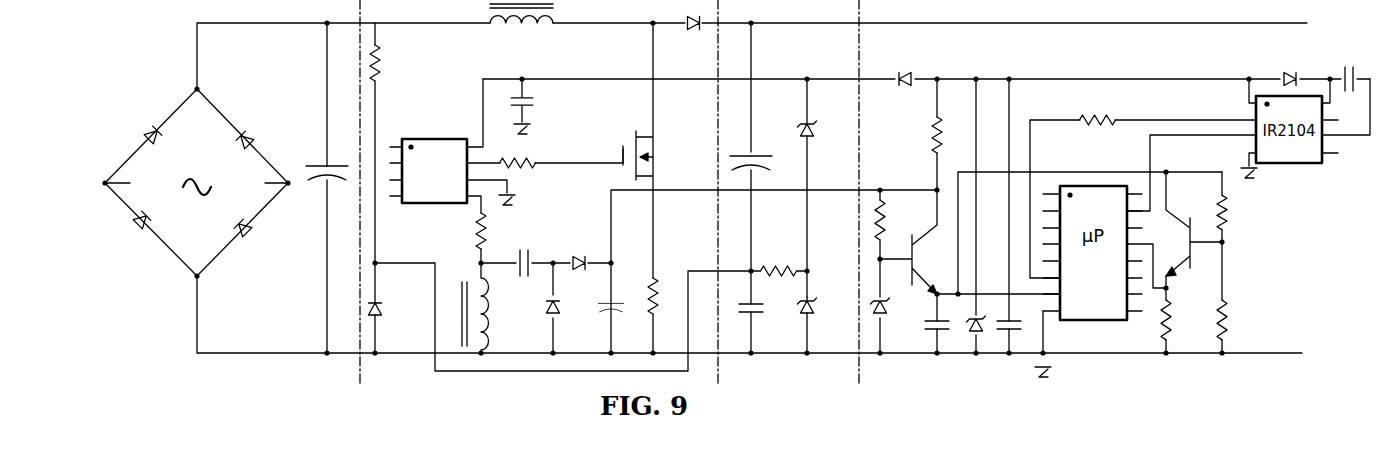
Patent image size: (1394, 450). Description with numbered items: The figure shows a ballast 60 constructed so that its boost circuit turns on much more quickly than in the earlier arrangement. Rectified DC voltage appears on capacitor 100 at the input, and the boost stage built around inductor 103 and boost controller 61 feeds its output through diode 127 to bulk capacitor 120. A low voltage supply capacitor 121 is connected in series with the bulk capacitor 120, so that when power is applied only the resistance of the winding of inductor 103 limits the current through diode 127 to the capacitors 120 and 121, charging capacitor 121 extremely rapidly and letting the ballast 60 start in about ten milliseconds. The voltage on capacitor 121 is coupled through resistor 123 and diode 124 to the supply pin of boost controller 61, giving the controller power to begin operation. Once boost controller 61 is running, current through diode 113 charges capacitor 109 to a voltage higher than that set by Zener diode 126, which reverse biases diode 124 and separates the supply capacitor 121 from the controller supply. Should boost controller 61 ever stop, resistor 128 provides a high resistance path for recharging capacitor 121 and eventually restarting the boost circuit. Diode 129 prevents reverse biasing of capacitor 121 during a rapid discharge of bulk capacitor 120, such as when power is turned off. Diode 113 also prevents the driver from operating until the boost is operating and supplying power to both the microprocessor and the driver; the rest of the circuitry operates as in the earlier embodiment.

The ballast 60 is at (186, 55).
The capacitor 100 is at (309, 163).
The resistor 128 is at (385, 65).
The diode 129 is at (380, 302).
The inductor 103 is at (517, 30).
The diode 127 is at (696, 33).
The boost controller 61 is at (447, 137).
The capacitor 109 is at (540, 99).
The bulk capacitor 120 is at (760, 152).
The diode 124 is at (815, 128).
The resistor 123 is at (776, 262).
The low voltage supply capacitor 121 is at (765, 308).
The Zener diode 126 is at (820, 306).
The diode 113 is at (897, 65).